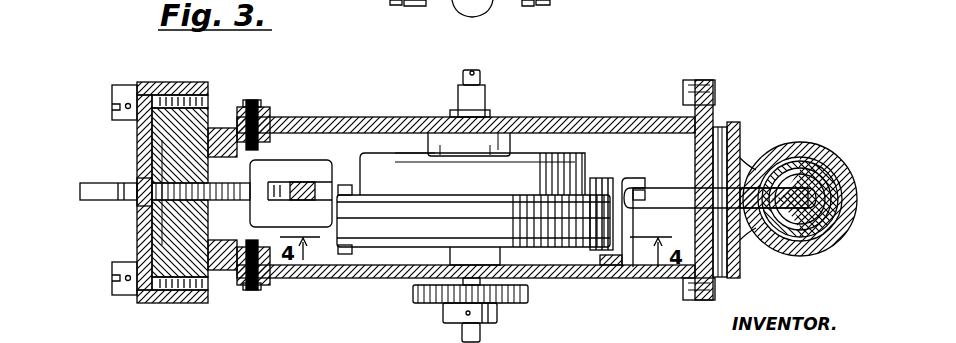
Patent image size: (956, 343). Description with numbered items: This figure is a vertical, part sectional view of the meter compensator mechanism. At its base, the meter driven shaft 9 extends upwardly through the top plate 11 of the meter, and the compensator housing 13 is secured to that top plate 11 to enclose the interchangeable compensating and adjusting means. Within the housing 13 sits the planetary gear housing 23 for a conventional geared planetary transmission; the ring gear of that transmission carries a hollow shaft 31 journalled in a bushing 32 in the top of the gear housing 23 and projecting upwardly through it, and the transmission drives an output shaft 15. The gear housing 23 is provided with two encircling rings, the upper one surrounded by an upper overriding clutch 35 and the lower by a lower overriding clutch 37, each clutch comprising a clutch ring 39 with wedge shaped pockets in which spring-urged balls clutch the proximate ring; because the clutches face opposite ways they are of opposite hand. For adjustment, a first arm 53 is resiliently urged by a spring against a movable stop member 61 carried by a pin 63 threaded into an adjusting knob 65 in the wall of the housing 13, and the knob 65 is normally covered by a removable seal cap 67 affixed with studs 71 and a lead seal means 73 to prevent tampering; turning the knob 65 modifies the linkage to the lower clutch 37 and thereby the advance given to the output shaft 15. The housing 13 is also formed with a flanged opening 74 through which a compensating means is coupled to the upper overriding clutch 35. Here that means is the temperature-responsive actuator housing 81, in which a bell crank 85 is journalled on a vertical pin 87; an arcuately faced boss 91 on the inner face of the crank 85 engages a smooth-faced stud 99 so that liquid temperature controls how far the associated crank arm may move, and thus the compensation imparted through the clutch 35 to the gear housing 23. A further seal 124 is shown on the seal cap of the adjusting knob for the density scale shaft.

The meter driven shaft 9 is at (470, 284).
The top plate 11 is at (570, 279).
The housing 13 is at (222, 270).
The output shaft 15 is at (481, 80).
The planetary gear housing 23 is at (590, 170).
The hollow shaft 31 is at (457, 106).
The bushing 32 is at (490, 113).
The upper overriding clutch 35 is at (632, 173).
The lower overriding clutch 37 is at (605, 232).
The clutch ring 39 is at (410, 232).
The first arm 53 is at (342, 185).
The movable stop member 61 is at (268, 174).
The pin 63 is at (237, 183).
The adjusting knob 65 is at (152, 152).
The removable seal cap 67 is at (142, 212).
The studs 71 is at (112, 96).
The lead seal means 73 is at (86, 183).
The flanged opening 74 is at (690, 152).
The actuator housing 81 is at (830, 156).
The bell crank 85 is at (780, 192).
The vertical pin 87 is at (735, 258).
The arcuately faced boss 91 is at (695, 189).
The smooth-faced stud 99 is at (661, 190).
The seal 124 is at (455, 14).